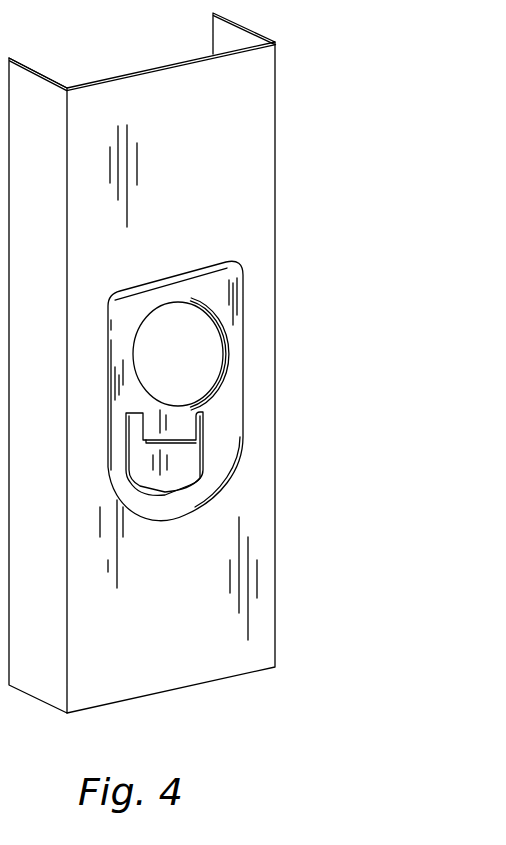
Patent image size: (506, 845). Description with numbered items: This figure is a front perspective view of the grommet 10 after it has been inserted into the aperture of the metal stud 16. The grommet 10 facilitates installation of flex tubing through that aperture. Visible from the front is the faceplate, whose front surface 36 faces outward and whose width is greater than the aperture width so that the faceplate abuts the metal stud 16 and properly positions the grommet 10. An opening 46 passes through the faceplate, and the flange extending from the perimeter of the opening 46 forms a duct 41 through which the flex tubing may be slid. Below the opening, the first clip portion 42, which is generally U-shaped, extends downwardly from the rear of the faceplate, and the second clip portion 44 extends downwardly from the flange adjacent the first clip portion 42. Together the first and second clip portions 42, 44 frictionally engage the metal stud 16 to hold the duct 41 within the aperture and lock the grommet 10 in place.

The metal stud 16 is at (168, 80).
The grommet 10 is at (200, 288).
The front surface 36 is at (151, 323).
The opening 46 is at (192, 360).
The duct 41 is at (210, 381).
The second clip portion 44 is at (188, 450).
The first clip portion 42 is at (207, 490).